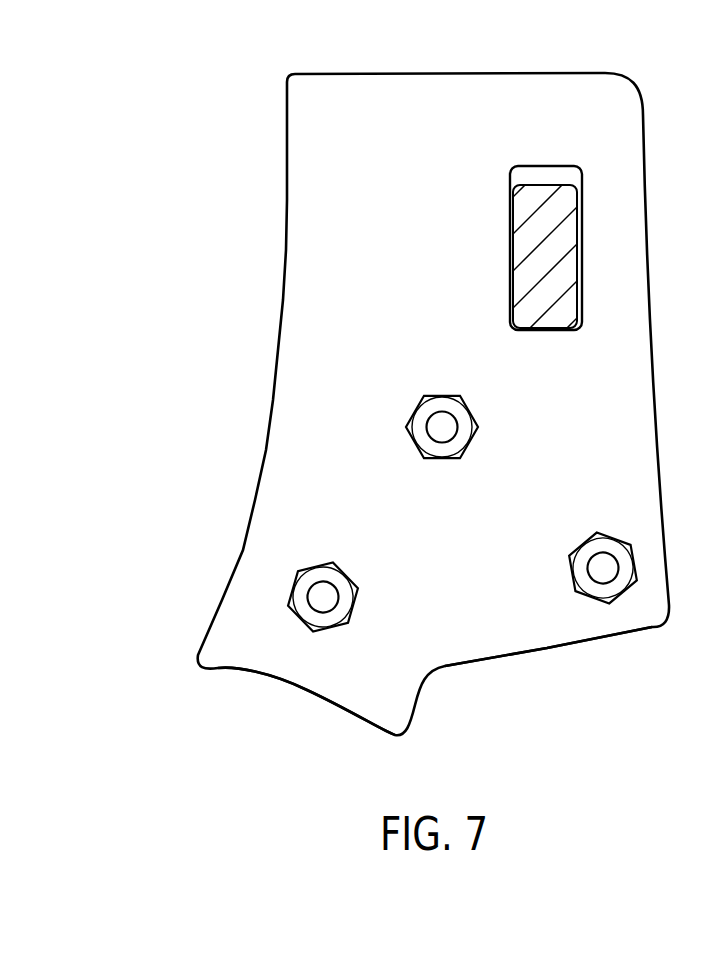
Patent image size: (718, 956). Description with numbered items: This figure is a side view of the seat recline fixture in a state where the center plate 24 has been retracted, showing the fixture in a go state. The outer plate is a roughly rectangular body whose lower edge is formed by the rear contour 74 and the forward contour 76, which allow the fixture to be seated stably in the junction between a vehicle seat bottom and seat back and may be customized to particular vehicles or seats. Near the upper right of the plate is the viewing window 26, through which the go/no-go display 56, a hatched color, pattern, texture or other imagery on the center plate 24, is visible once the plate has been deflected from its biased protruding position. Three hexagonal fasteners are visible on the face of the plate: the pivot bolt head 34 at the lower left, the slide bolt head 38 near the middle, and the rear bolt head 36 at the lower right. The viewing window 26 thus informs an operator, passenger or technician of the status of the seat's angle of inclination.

The center plate 24 is at (395, 100).
The viewing window 26 is at (572, 168).
The go/no-go display 56 is at (560, 238).
The slide bolt head 38 is at (443, 423).
The pivot bolt head 34 is at (325, 597).
The rear bolt head 36 is at (603, 567).
The rear contour 74 is at (552, 668).
The forward contour 76 is at (292, 700).